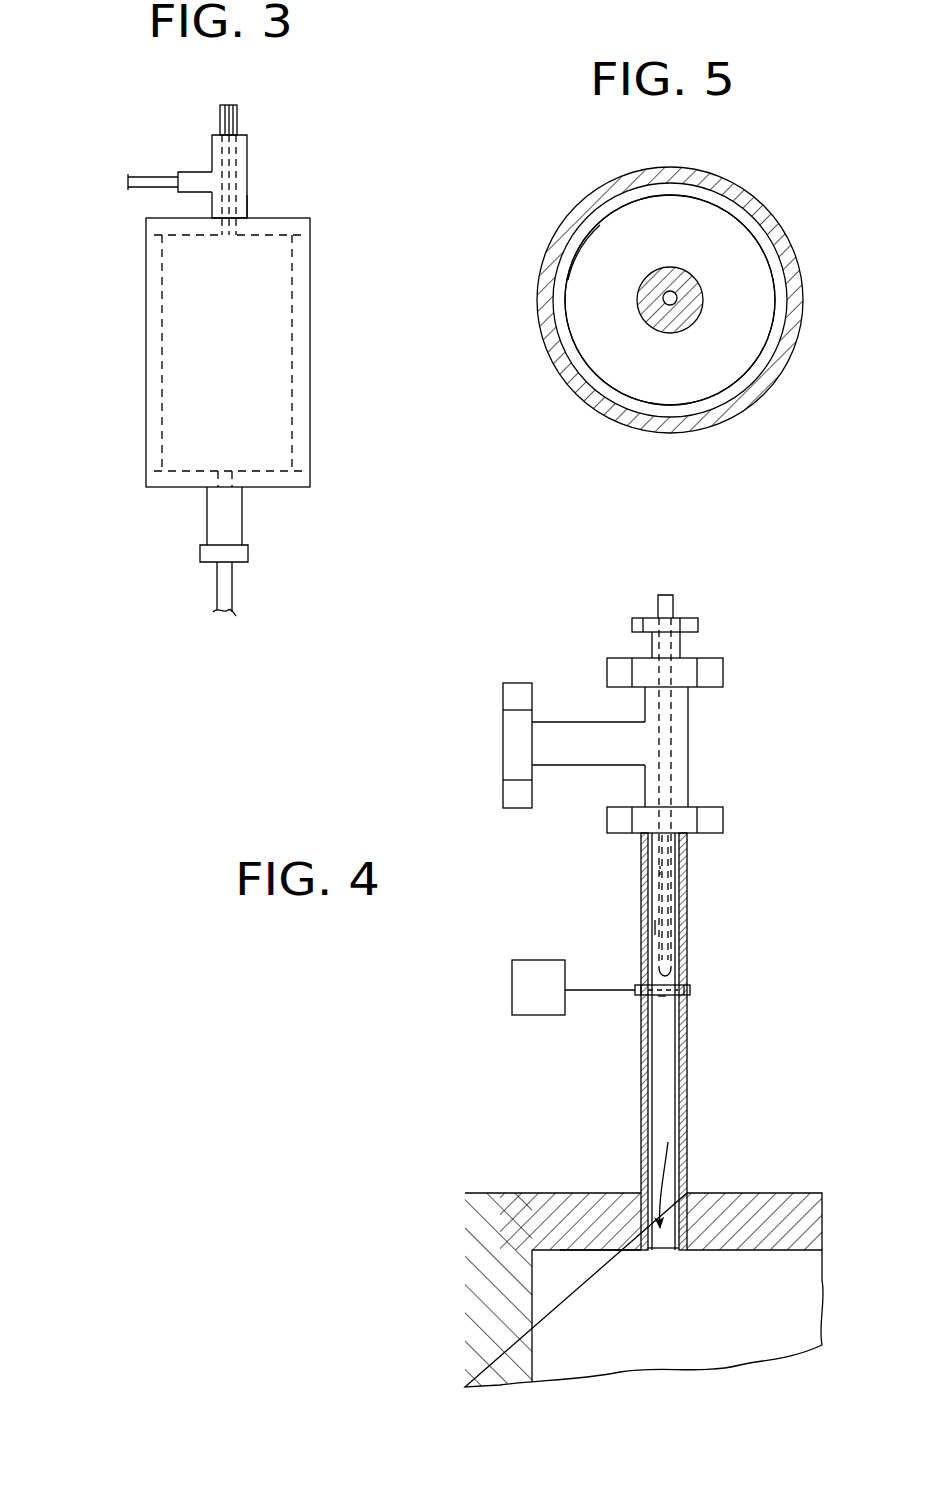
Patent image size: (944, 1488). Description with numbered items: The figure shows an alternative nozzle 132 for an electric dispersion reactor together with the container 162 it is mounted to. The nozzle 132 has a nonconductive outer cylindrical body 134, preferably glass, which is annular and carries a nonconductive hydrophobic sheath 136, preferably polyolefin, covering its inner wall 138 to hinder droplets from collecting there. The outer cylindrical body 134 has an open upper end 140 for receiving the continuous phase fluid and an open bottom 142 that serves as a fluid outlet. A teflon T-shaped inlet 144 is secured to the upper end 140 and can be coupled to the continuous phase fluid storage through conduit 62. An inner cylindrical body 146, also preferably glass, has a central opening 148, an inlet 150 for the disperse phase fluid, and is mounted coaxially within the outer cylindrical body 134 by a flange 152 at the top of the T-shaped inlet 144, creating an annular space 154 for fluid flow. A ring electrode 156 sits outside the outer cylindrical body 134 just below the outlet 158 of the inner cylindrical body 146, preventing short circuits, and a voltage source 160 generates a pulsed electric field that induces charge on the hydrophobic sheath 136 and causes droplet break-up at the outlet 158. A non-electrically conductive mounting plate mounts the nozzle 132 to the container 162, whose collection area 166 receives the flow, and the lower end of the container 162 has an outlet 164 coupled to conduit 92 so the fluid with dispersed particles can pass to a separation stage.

In FIG. 3, the conduit 62 is at (145, 177).
In FIG. 3, the conduit 92 is at (217, 588).
In FIG. 3, the nozzle 132 is at (263, 172).
In FIG. 4, the nozzle 132 is at (704, 762).
In FIG. 3, the outer cylindrical body 134 is at (249, 198).
In FIG. 5, the outer cylindrical body 134 is at (747, 182).
In FIG. 4, the outer cylindrical body 134 is at (688, 902).
In FIG. 5, the hydrophobic sheath 136 is at (783, 255).
In FIG. 4, the hydrophobic sheath 136 is at (684, 1018).
In FIG. 5, the inner wall 138 is at (568, 280).
In FIG. 4, the inner wall 138 is at (658, 1110).
In FIG. 4, the open upper end 140 is at (688, 835).
In FIG. 4, the open bottom 142 is at (684, 1147).
In FIG. 3, the T-shaped inlet 144 is at (193, 172).
In FIG. 4, the T-shaped inlet 144 is at (580, 722).
In FIG. 3, the inner cylindrical body 146 is at (237, 118).
In FIG. 5, the inner cylindrical body 146 is at (640, 310).
In FIG. 4, the inner cylindrical body 146 is at (675, 605).
In FIG. 5, the central opening 148 is at (678, 300).
In FIG. 4, the central opening 148 is at (663, 872).
In FIG. 4, the inlet 150 is at (665, 595).
In FIG. 4, the flange 152 is at (700, 625).
In FIG. 5, the annular space 154 is at (615, 250).
In FIG. 4, the annular space 154 is at (655, 927).
In FIG. 4, the electrode 156 is at (690, 988).
In FIG. 4, the outlet 158 is at (662, 996).
In FIG. 4, the voltage source 160 is at (512, 990).
In FIG. 3, the container 162 is at (147, 330).
In FIG. 4, the container 162 is at (480, 1193).
In FIG. 3, the outlet 164 is at (207, 520).
In FIG. 4, the collection area 166 is at (727, 1319).